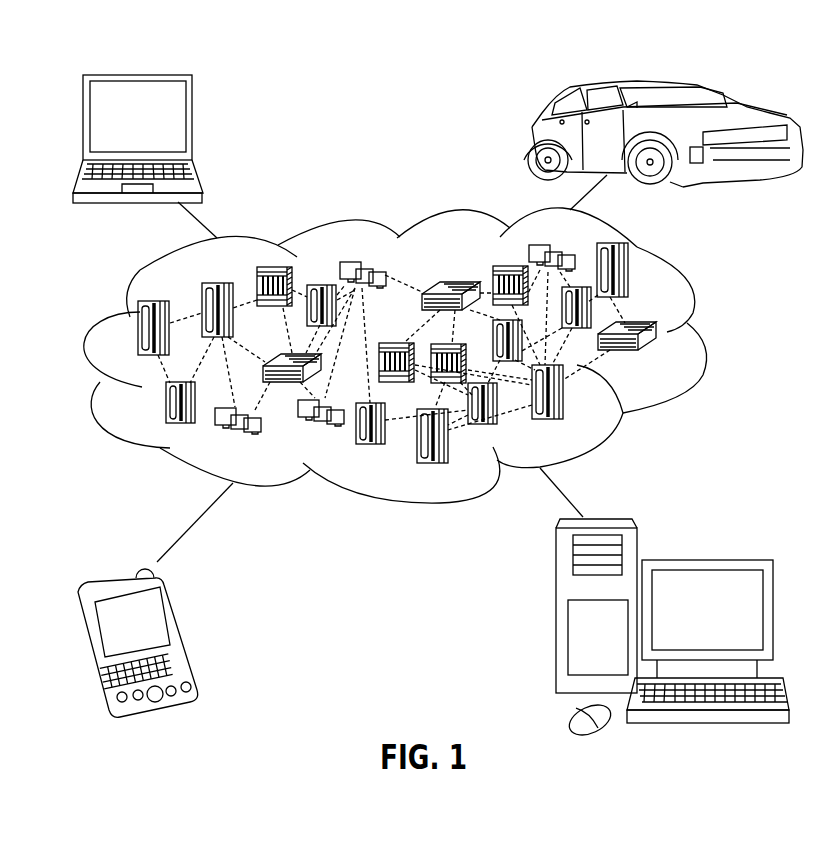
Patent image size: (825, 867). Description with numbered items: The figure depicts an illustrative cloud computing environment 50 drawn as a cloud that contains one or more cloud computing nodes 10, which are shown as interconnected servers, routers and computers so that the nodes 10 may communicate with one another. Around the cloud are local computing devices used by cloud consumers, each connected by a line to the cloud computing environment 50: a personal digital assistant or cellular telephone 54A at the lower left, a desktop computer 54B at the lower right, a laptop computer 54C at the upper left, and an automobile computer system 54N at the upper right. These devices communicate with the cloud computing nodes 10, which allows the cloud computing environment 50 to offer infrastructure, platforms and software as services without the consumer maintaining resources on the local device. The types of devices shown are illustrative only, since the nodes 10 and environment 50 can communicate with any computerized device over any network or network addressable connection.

The cloud computing nodes 10 is at (668, 361).
The cloud computing environment 50 is at (707, 336).
The personal digital assistant (PDA) or cellular telephone 54A is at (183, 633).
The desktop computer 54B is at (705, 558).
The laptop computer 54C is at (192, 122).
The automobile computer system 54N is at (533, 133).